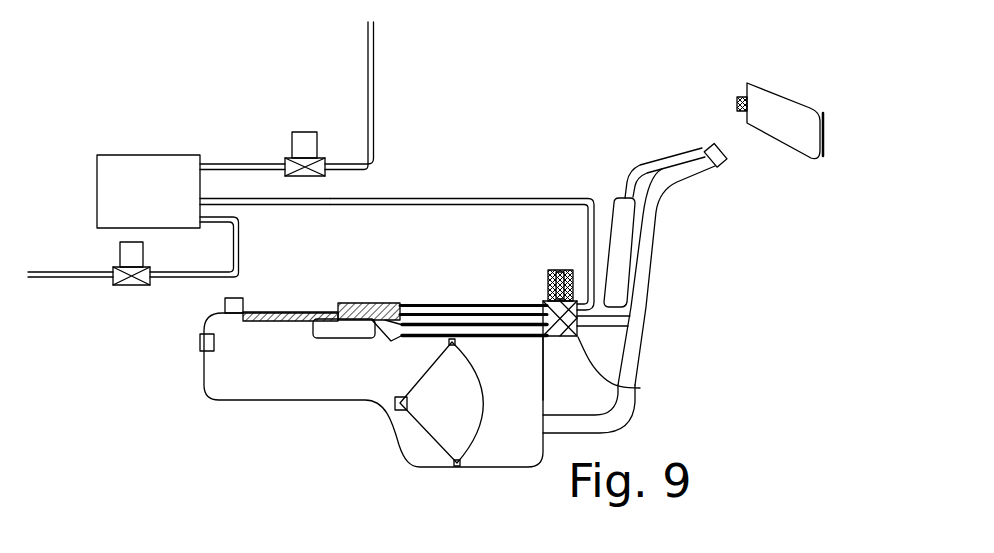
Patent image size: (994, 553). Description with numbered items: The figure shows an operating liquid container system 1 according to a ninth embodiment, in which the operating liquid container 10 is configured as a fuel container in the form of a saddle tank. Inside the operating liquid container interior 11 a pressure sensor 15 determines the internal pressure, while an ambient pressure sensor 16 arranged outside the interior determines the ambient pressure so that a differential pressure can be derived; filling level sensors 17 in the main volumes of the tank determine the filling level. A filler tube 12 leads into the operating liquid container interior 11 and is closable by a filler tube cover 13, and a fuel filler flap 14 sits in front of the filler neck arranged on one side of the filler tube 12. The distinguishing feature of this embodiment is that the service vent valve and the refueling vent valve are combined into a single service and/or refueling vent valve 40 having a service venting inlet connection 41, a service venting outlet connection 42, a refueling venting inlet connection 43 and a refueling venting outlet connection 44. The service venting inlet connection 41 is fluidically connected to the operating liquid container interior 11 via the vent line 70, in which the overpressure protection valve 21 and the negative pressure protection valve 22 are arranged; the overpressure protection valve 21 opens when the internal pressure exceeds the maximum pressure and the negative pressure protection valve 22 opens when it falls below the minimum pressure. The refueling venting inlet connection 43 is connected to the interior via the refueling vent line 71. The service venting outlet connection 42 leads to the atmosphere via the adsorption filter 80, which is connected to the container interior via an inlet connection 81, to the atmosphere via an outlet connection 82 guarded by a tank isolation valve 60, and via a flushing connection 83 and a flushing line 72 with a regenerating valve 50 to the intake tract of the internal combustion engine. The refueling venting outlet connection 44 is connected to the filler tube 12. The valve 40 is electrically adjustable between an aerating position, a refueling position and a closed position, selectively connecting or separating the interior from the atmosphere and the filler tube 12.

The operating liquid container system 1 is at (95, 51).
The operating liquid container 10 is at (165, 451).
The operating liquid container interior 11 is at (203, 378).
The filler tube 12 is at (647, 250).
The filler tube cover 13 is at (727, 152).
The fuel filler flap 14 is at (778, 118).
The pressure sensor 15 is at (200, 345).
The ambient pressure sensor 16 is at (244, 299).
The filling level sensor 17 is at (392, 410).
The overpressure protection valve 21 is at (573, 292).
The negative pressure protection valve 22 is at (553, 282).
The service and/or refueling vent valve 40 is at (550, 301).
The service venting inlet connection 41 is at (545, 312).
The service venting outlet connection 42 is at (636, 316).
The refueling venting inlet connection 43 is at (545, 338).
The refueling venting outlet connection 44 is at (642, 389).
The regenerating valve 50 is at (132, 287).
The tank isolation valve 60 is at (324, 158).
The vent line 70 is at (440, 198).
The refueling vent line 71 is at (643, 163).
The flushing line 72 is at (68, 279).
The adsorption filter 80 is at (152, 173).
The inlet connection 81 is at (205, 198).
The outlet connection 82 is at (204, 163).
The flushing connection 83 is at (212, 228).